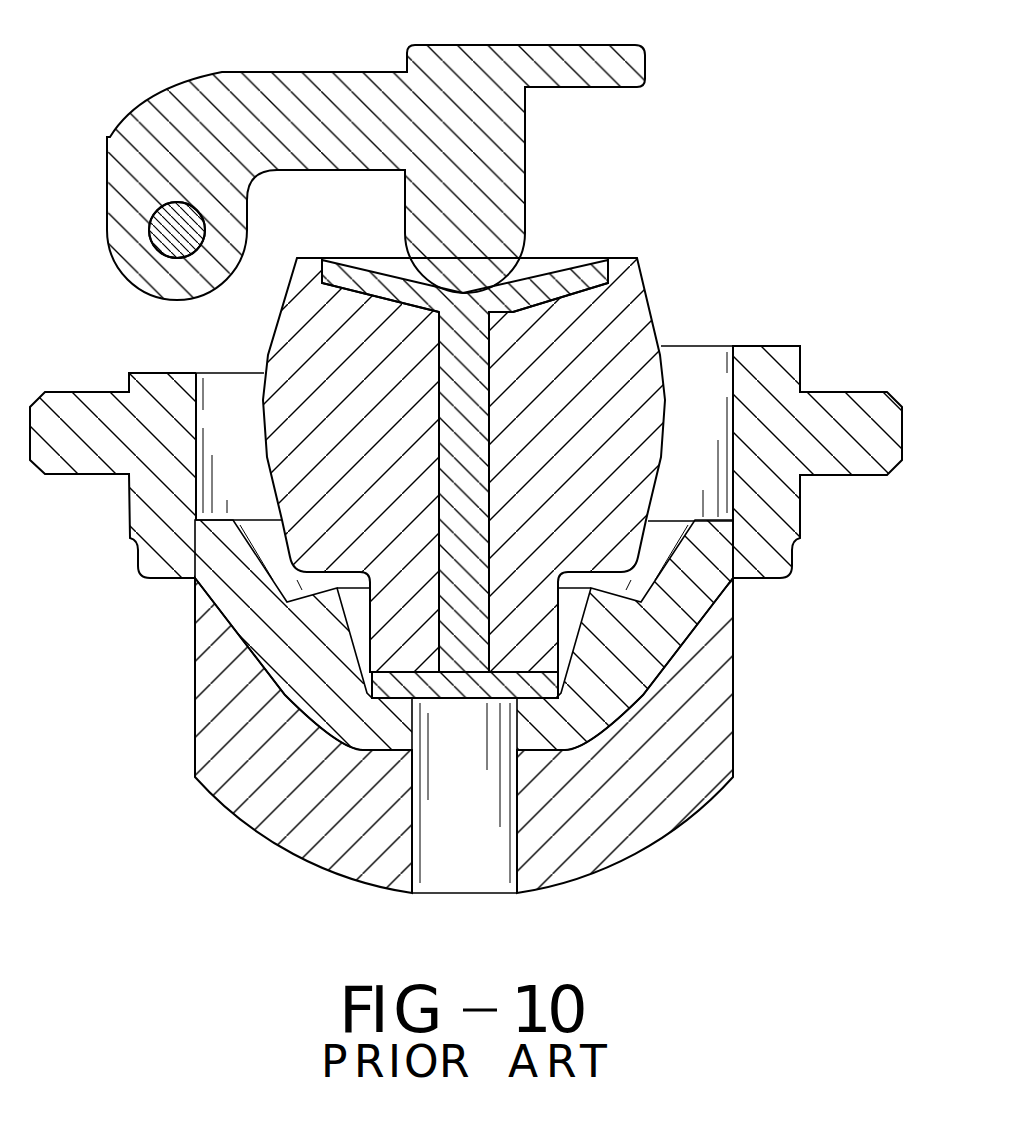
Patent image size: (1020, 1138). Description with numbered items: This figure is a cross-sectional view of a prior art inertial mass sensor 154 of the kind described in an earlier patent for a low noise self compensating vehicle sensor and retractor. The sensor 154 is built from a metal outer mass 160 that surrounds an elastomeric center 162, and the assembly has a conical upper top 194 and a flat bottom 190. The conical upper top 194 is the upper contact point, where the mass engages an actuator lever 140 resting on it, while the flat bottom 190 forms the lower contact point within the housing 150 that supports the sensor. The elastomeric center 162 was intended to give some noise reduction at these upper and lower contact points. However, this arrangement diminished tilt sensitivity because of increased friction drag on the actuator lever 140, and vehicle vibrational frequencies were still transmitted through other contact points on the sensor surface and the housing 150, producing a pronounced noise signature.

The actuator lever 140 is at (328, 82).
The housing 150 is at (721, 388).
The inertial mass sensor 154 is at (479, 448).
The metal outer mass 160 is at (318, 497).
The elastomeric center 162 is at (392, 583).
The flat bottom 190 is at (440, 687).
The conical upper top 194 is at (565, 273).